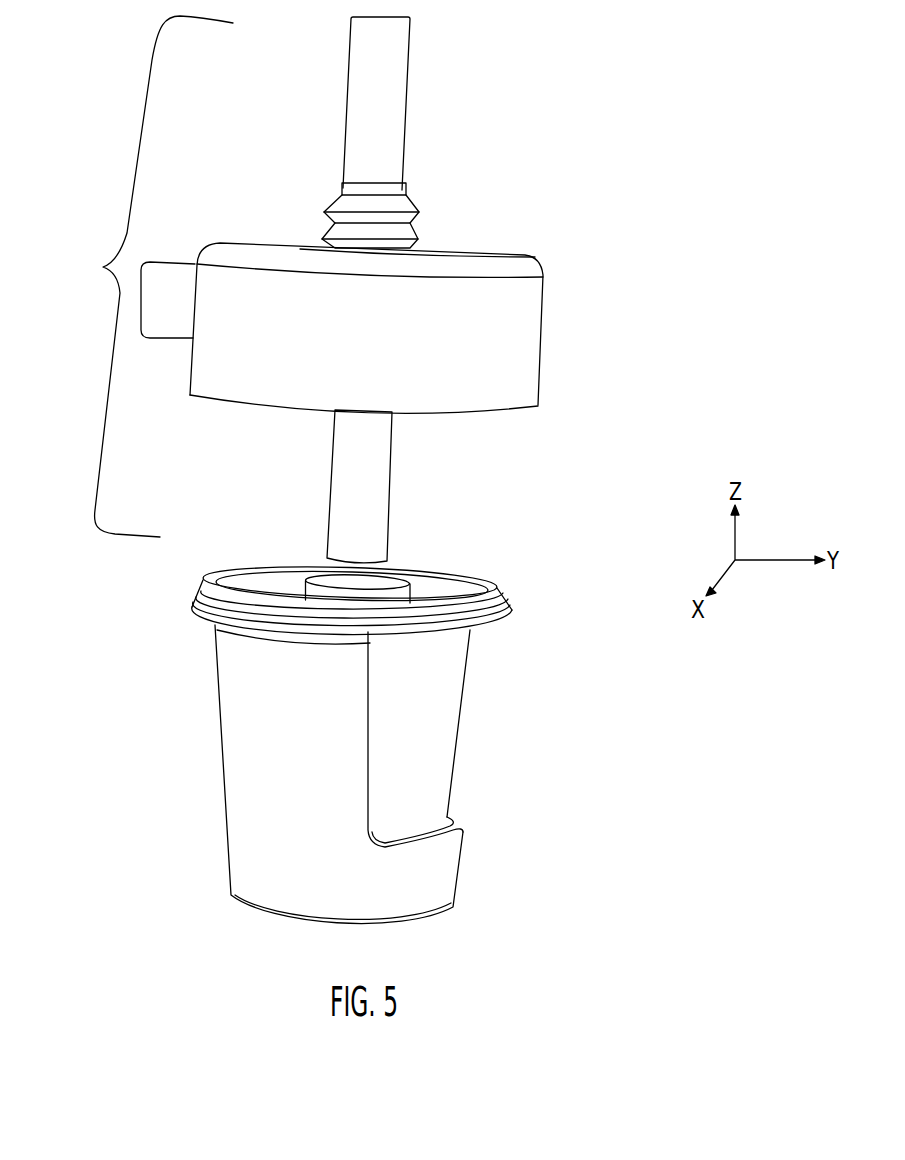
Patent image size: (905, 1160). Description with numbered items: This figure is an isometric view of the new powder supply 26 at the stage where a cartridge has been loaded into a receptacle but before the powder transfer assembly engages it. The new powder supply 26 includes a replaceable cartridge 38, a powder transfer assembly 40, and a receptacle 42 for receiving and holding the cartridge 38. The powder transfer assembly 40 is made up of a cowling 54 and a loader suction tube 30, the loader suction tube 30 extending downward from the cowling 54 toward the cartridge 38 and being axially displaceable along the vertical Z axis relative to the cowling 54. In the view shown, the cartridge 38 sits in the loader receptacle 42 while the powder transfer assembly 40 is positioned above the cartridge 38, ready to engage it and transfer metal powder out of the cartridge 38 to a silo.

The new powder supply 26 is at (88, 138).
The powder transfer assembly 40 is at (103, 267).
The cowling 54 is at (543, 345).
The loader suction tube 30 is at (393, 489).
The replaceable cartridge 38 is at (512, 608).
The receptacle 42 is at (447, 887).